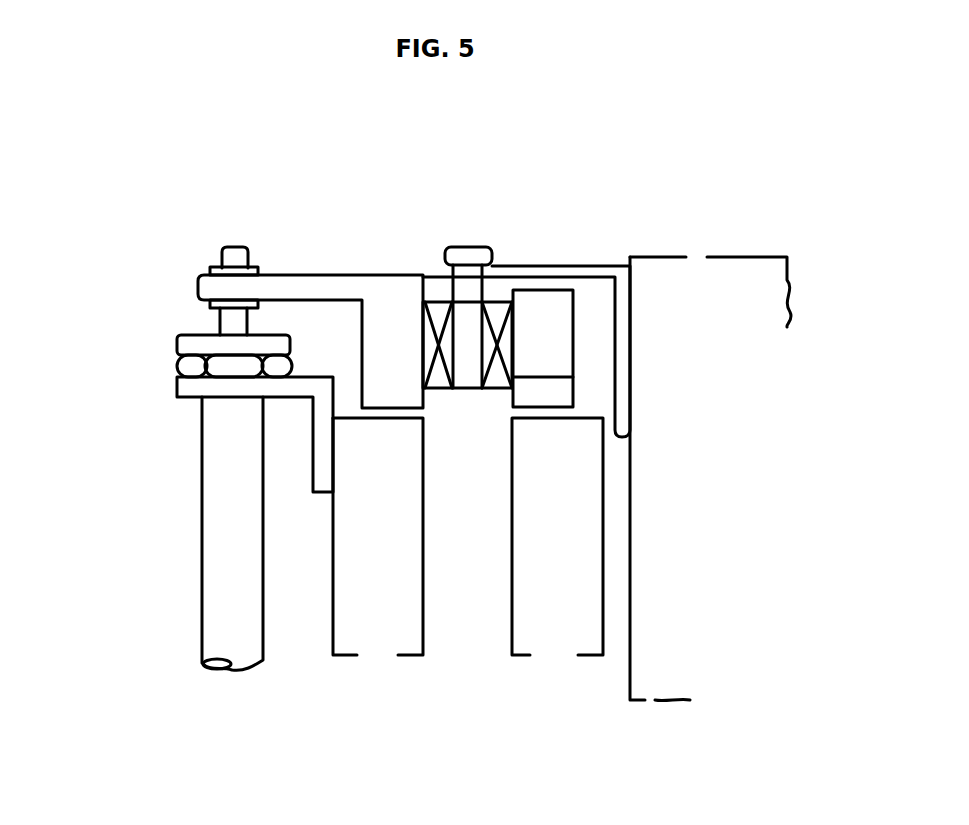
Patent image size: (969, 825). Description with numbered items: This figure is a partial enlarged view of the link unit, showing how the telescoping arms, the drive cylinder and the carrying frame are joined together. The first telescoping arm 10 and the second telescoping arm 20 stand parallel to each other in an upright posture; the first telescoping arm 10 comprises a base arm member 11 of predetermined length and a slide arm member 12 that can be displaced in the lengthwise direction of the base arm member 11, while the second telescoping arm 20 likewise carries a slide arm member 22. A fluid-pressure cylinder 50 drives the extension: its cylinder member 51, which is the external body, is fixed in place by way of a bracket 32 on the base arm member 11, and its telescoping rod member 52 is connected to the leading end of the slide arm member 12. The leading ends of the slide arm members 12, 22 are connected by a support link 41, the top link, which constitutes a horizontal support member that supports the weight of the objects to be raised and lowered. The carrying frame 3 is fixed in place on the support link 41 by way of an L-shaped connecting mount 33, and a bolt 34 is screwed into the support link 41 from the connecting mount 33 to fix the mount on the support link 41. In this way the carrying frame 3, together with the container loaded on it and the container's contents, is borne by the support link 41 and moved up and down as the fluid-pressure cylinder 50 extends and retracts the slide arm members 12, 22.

The carrying frame 3 is at (755, 257).
The first telescoping arm 10 is at (381, 703).
The base arm member 11 is at (337, 600).
The slide arm member 12 is at (388, 284).
The second telescoping arm 20 is at (563, 699).
The slide arm member 22 is at (548, 292).
The bracket 32 is at (177, 383).
The L-shaped connecting mount 33 is at (608, 263).
The bolt 34 is at (460, 302).
The support link 41 is at (462, 303).
The fluid-pressure cylinder 50 is at (134, 450).
The cylinder member 51 is at (203, 510).
The telescoping rod member 52 is at (228, 243).